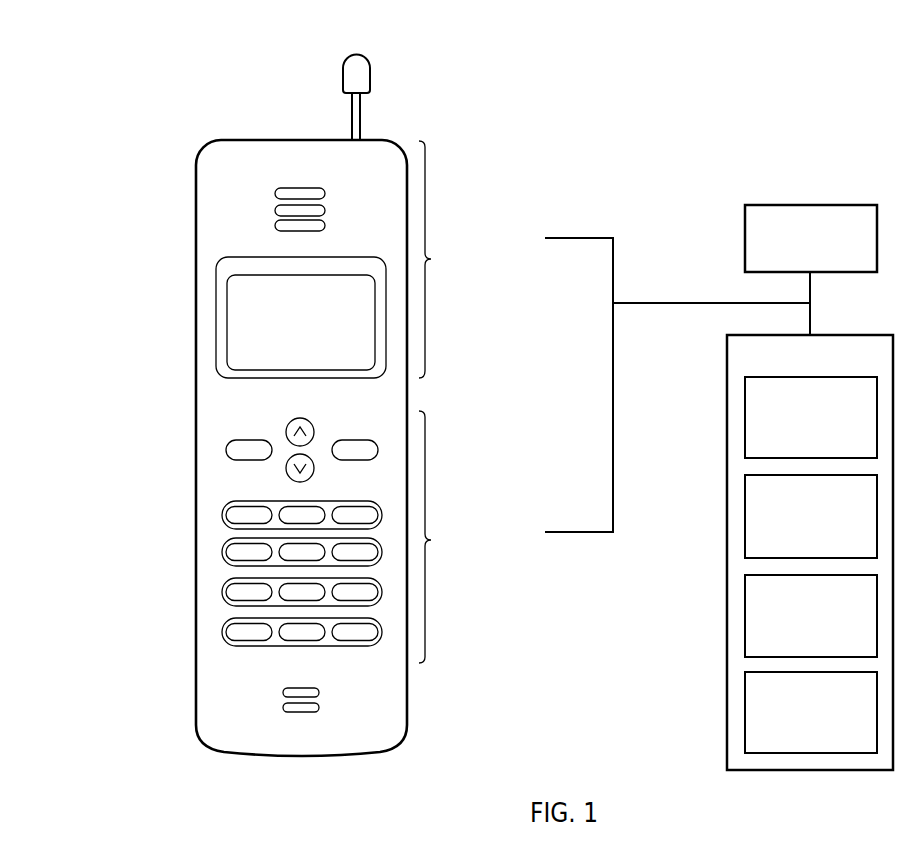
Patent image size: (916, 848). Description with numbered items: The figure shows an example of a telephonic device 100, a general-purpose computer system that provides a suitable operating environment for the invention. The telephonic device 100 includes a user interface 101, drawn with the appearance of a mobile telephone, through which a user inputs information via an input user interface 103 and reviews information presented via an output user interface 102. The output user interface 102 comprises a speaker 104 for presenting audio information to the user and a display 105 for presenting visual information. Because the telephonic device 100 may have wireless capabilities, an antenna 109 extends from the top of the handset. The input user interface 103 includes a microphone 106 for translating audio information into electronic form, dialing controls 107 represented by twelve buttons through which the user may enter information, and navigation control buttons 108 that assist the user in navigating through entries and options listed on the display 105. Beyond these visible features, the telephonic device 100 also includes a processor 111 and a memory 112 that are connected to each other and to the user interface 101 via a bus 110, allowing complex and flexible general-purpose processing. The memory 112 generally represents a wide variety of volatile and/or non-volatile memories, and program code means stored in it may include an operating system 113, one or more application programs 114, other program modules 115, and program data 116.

The telephonic device 100 is at (650, 117).
The user interface 101 is at (196, 760).
The output user interface 102 is at (516, 259).
The input user interface 103 is at (516, 483).
The speaker 104 is at (187, 205).
The display 105 is at (187, 328).
The microphone 106 is at (187, 697).
The dialing controls 107 is at (187, 647).
The navigation control buttons 108 is at (187, 443).
The antenna 109 is at (390, 104).
The bus 110 is at (645, 303).
The processor 111 is at (798, 261).
The memory 112 is at (853, 365).
The operating system 113 is at (798, 449).
The application programs 114 is at (798, 547).
The program modules 115 is at (798, 647).
The program data 116 is at (798, 744).